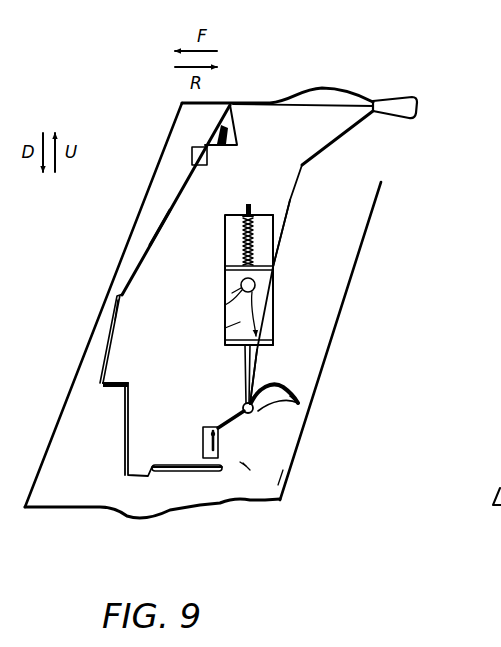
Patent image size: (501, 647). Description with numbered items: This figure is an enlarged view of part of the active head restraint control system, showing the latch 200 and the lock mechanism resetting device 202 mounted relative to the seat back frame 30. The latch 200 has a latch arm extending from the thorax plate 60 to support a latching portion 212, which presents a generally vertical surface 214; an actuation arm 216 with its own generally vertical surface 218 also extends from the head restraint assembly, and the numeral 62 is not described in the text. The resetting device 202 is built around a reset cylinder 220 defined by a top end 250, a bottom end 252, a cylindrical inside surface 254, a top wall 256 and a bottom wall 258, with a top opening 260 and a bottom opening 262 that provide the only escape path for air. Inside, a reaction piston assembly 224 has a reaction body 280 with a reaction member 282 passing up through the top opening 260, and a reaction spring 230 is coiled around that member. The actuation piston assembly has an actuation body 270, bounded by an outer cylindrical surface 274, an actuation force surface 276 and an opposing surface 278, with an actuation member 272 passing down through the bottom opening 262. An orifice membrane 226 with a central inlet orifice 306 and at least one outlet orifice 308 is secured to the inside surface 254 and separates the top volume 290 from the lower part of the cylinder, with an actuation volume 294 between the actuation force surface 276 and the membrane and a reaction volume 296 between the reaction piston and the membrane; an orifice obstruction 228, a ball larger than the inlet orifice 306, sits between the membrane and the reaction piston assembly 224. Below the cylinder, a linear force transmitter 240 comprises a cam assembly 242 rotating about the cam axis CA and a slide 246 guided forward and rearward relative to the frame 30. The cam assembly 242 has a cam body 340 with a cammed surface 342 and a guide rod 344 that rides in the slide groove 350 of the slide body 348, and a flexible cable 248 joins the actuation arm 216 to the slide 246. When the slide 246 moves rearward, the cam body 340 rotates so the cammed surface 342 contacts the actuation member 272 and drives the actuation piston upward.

The seat back frame 30 is at (276, 214).
The thorax plate 60 is at (100, 347).
The panel edge 62 is at (147, 233).
The latch 200 is at (258, 127).
The lock mechanism resetting device 202 is at (416, 167).
The latching portion 212 is at (200, 150).
The generally vertical surface 214 is at (190, 153).
The actuation arm 216 is at (240, 108).
The generally vertical surface 218 is at (131, 438).
The reset cylinder 220 is at (170, 210).
The reaction piston assembly 224 is at (374, 196).
The orifice membrane 226 is at (280, 288).
The orifice obstruction 228 is at (220, 269).
The reaction spring 230 is at (265, 229).
The linear force transmitter 240 is at (245, 468).
The cam assembly 242 is at (280, 402).
The slide 246 is at (205, 458).
The flexible cable 248 is at (157, 481).
The top end 250 is at (308, 165).
The bottom end 252 is at (280, 338).
The cylindrical inside surface 254 is at (266, 295).
The top wall 256 is at (260, 215).
The bottom wall 258 is at (273, 351).
The top opening 260 is at (252, 209).
The bottom opening 262 is at (243, 365).
The actuation body 270 is at (226, 329).
The actuation member 272 is at (242, 370).
The outer cylindrical surface 274 is at (220, 340).
The actuation force surface 276 is at (276, 266).
The opposing surface 278 is at (270, 353).
The reaction body 280 is at (275, 250).
The reaction member 282 is at (246, 216).
The top volume 290 is at (295, 206).
The actuation volume 294 is at (115, 309).
The reaction volume 296 is at (213, 249).
The inlet orifice 306 is at (225, 305).
The outlet orifice 308 is at (230, 293).
The cam body 340 is at (276, 405).
The cammed surface 342 is at (298, 383).
The guide rod 344 is at (105, 379).
The slide body 348 is at (242, 464).
The slide groove 350 is at (213, 467).
The cam axis CA is at (278, 483).